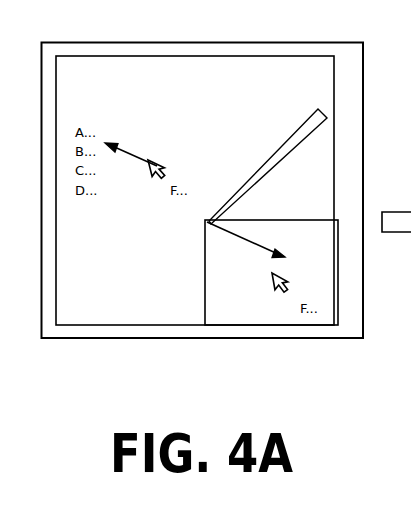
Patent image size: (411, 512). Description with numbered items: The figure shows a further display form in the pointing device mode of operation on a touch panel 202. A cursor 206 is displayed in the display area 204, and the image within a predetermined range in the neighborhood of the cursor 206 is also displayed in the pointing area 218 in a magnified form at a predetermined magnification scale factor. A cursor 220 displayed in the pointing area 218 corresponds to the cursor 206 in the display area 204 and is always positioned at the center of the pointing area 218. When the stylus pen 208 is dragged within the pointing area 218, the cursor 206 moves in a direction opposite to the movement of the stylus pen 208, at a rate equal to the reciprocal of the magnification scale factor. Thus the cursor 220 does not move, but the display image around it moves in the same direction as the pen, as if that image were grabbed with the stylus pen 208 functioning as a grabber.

The touch panel 202 is at (165, 335).
The display area 204 is at (178, 68).
The cursor 206 is at (165, 163).
The stylus pen 208 is at (296, 131).
The pointing area 218 is at (238, 323).
The cursor 220 is at (287, 283).